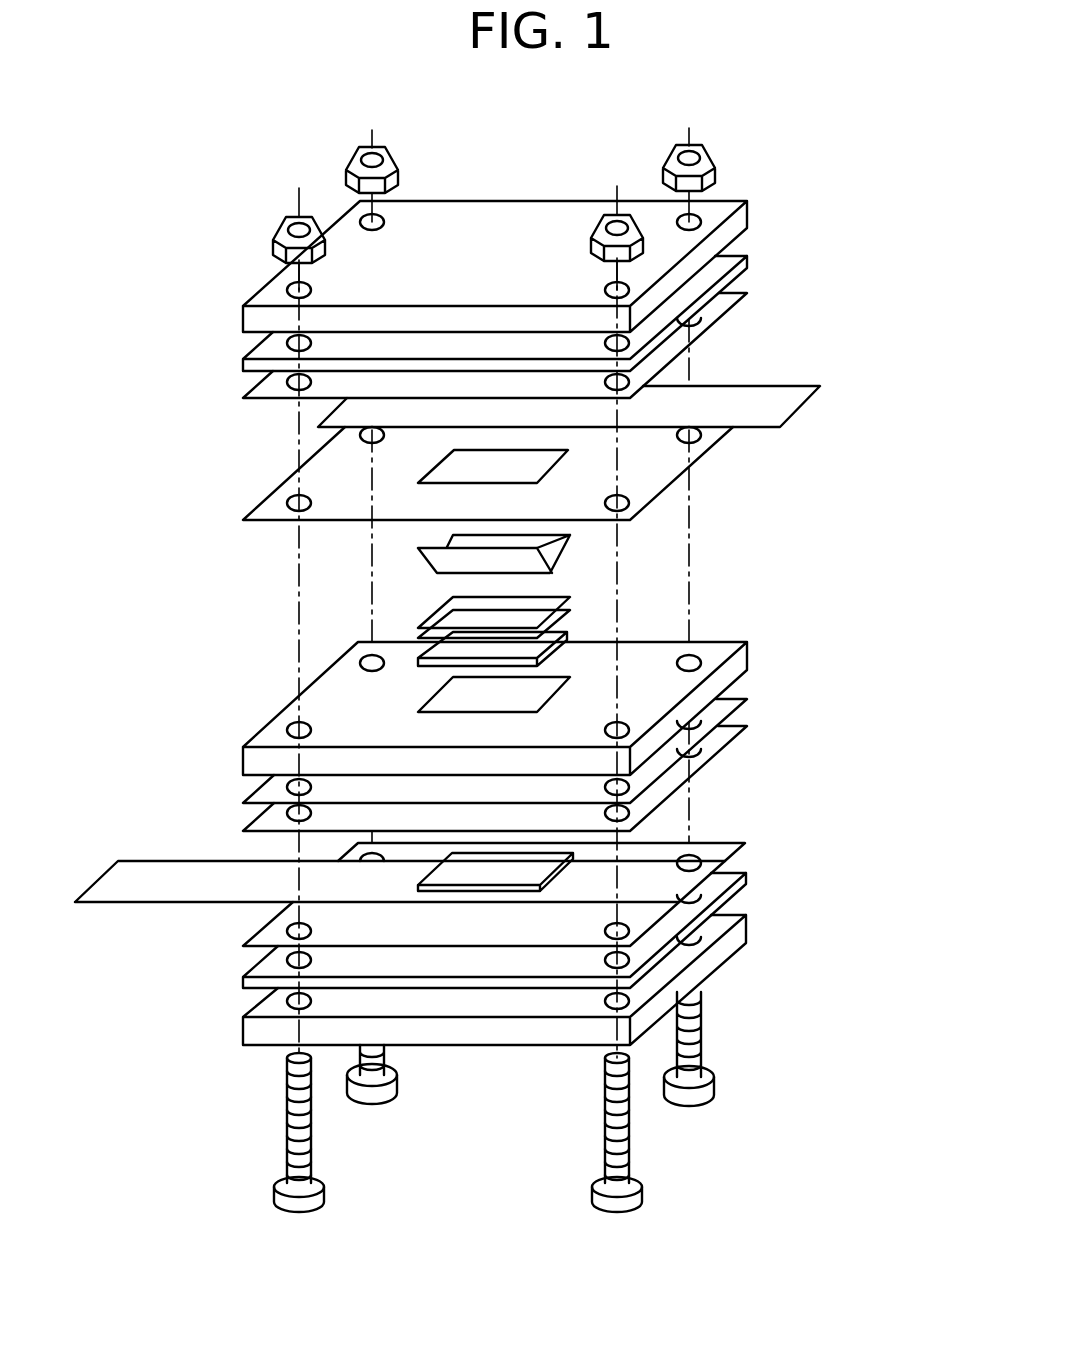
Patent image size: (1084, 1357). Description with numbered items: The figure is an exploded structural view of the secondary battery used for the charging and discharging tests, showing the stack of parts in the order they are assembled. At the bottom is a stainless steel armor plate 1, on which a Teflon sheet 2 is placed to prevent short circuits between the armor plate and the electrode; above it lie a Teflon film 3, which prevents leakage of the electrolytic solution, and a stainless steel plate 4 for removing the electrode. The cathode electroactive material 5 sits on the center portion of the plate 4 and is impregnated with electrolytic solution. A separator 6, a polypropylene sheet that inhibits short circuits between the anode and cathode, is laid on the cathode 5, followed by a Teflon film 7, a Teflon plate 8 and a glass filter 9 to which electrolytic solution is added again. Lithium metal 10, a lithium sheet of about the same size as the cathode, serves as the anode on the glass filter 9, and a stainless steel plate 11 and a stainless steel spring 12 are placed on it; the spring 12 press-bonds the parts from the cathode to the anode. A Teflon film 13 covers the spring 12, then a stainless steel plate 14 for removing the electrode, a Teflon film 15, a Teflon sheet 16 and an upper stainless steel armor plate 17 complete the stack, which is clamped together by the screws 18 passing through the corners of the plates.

The stainless steel armor plate 1 is at (740, 966).
The Teflon sheet 2 is at (712, 890).
The Teflon film 3 is at (707, 863).
The stainless steel plate for removing the electrode 4 is at (163, 873).
The cathode electroactive material 5 is at (573, 853).
The separator 6 is at (737, 738).
The Teflon film 7 is at (737, 702).
The Teflon plate 8 is at (742, 655).
The glass filter 9 is at (553, 630).
The lithium metal 10 is at (433, 636).
The stainless steel plate 11 is at (450, 608).
The stainless steel spring 12 is at (438, 566).
The Teflon film 13 is at (730, 458).
The stainless steel plate for removing the electrode 14 is at (790, 392).
The Teflon film 15 is at (740, 303).
The Teflon sheet 16 is at (747, 260).
The stainless steel armor plate 17 is at (747, 215).
The screws 18 is at (700, 1045).